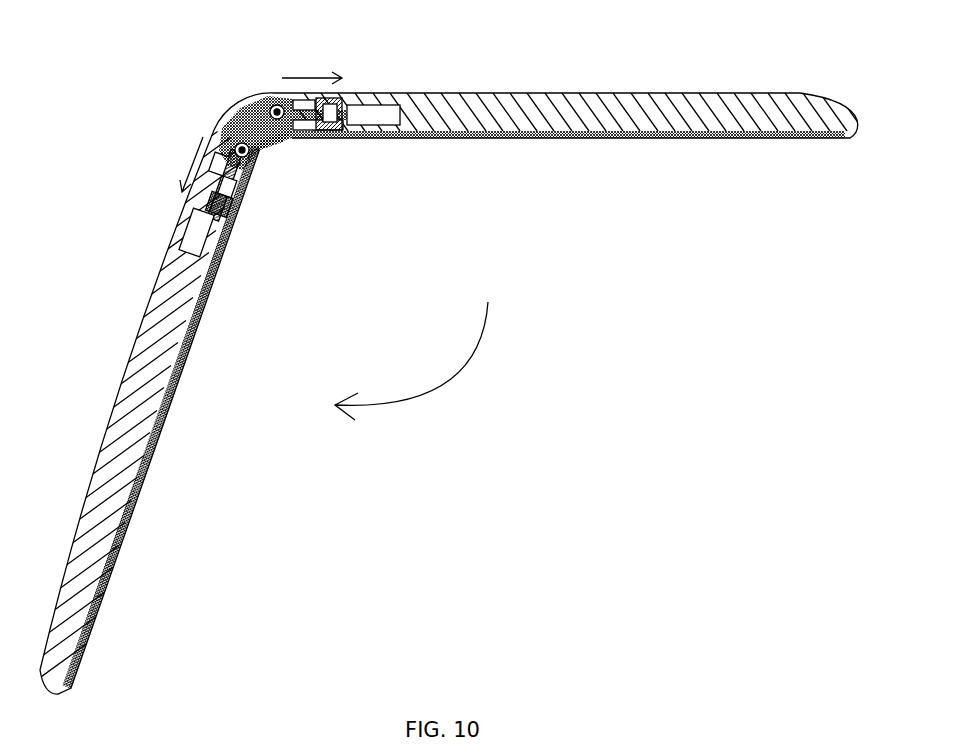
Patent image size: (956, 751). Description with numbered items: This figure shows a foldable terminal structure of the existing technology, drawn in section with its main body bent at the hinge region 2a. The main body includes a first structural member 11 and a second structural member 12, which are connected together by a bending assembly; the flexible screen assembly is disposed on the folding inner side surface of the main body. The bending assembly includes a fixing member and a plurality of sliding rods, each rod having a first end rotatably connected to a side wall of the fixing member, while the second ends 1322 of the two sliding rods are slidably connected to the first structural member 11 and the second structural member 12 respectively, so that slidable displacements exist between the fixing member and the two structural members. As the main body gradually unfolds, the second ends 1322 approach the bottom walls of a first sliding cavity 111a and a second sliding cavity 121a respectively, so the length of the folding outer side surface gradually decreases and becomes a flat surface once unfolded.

The first structural member 11 is at (612, 112).
The second structural member 12 is at (135, 382).
The rotating shaft assembly 2a is at (260, 142).
The first sliding cavity 111a is at (316, 137).
The second sliding cavity 121a is at (226, 197).
The second ends of the sliding rods 1322 is at (348, 90).